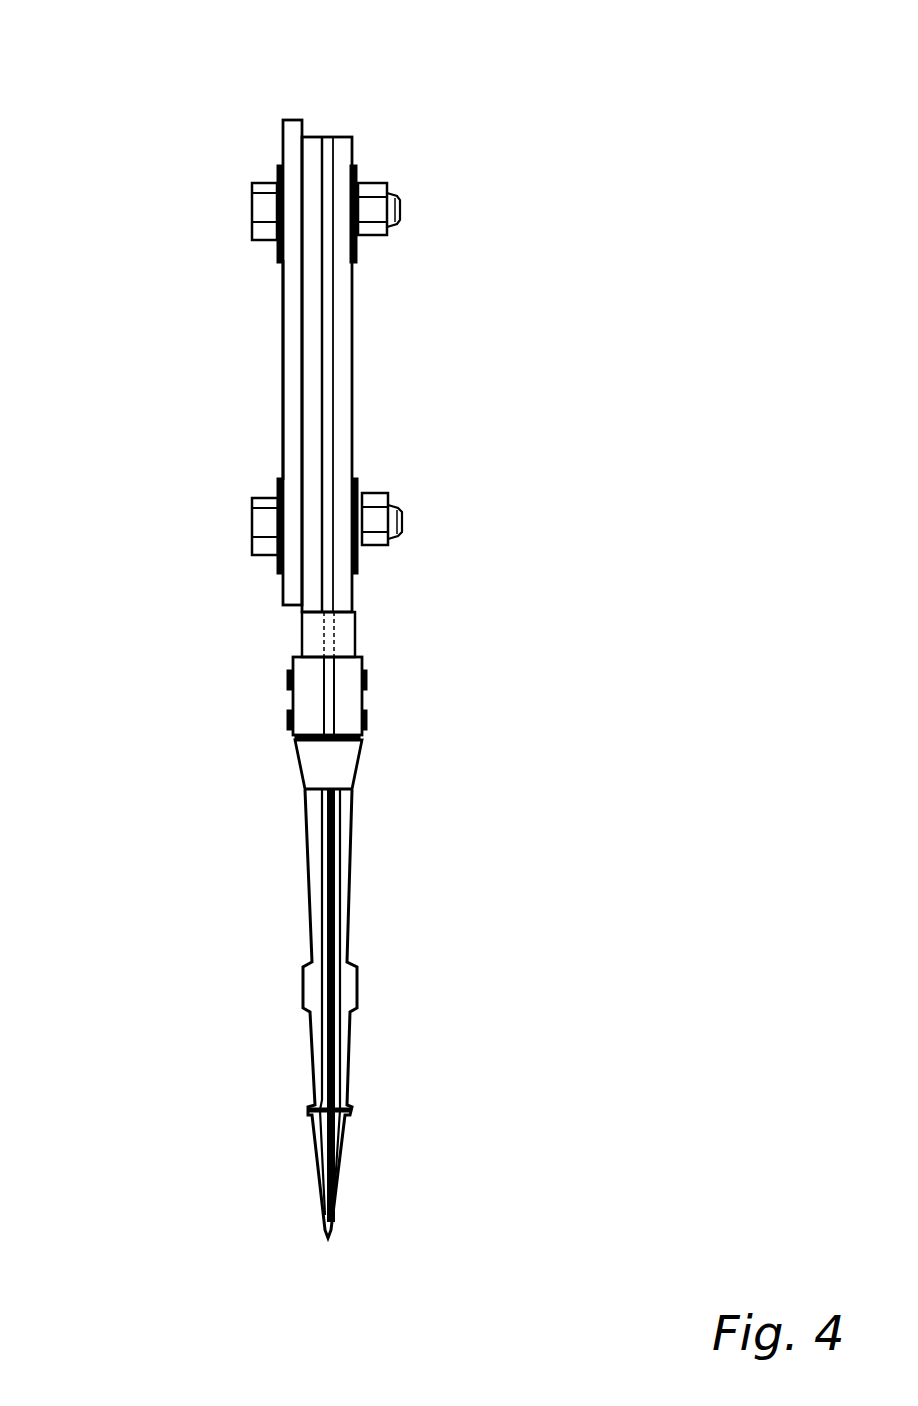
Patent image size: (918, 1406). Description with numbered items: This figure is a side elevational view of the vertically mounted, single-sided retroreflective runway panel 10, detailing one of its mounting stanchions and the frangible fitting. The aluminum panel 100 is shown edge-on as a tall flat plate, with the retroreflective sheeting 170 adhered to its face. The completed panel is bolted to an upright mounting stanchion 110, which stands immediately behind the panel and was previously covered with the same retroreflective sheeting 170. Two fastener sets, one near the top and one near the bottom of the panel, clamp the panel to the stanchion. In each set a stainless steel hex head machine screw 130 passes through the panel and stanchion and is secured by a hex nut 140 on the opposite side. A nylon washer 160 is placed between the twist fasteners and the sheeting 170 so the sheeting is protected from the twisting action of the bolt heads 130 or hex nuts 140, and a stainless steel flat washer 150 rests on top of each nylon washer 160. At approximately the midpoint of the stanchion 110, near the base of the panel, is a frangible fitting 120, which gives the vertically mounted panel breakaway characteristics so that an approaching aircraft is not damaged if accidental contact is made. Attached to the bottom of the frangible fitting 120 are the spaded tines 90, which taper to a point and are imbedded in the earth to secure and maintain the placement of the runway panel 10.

The retroreflective runway panel 10 is at (157, 487).
The spaded tines 90 is at (348, 947).
The aluminum panel 100 is at (293, 118).
The upright mounting stanchion 110 is at (350, 135).
The frangible fitting 120 is at (365, 703).
The hex head machine screw 130 is at (252, 182).
The hex nut 140 is at (387, 182).
The stainless steel flat washer 150 is at (280, 173).
The nylon washer 160 is at (280, 167).
The retroreflective sheeting 170 is at (227, 370).